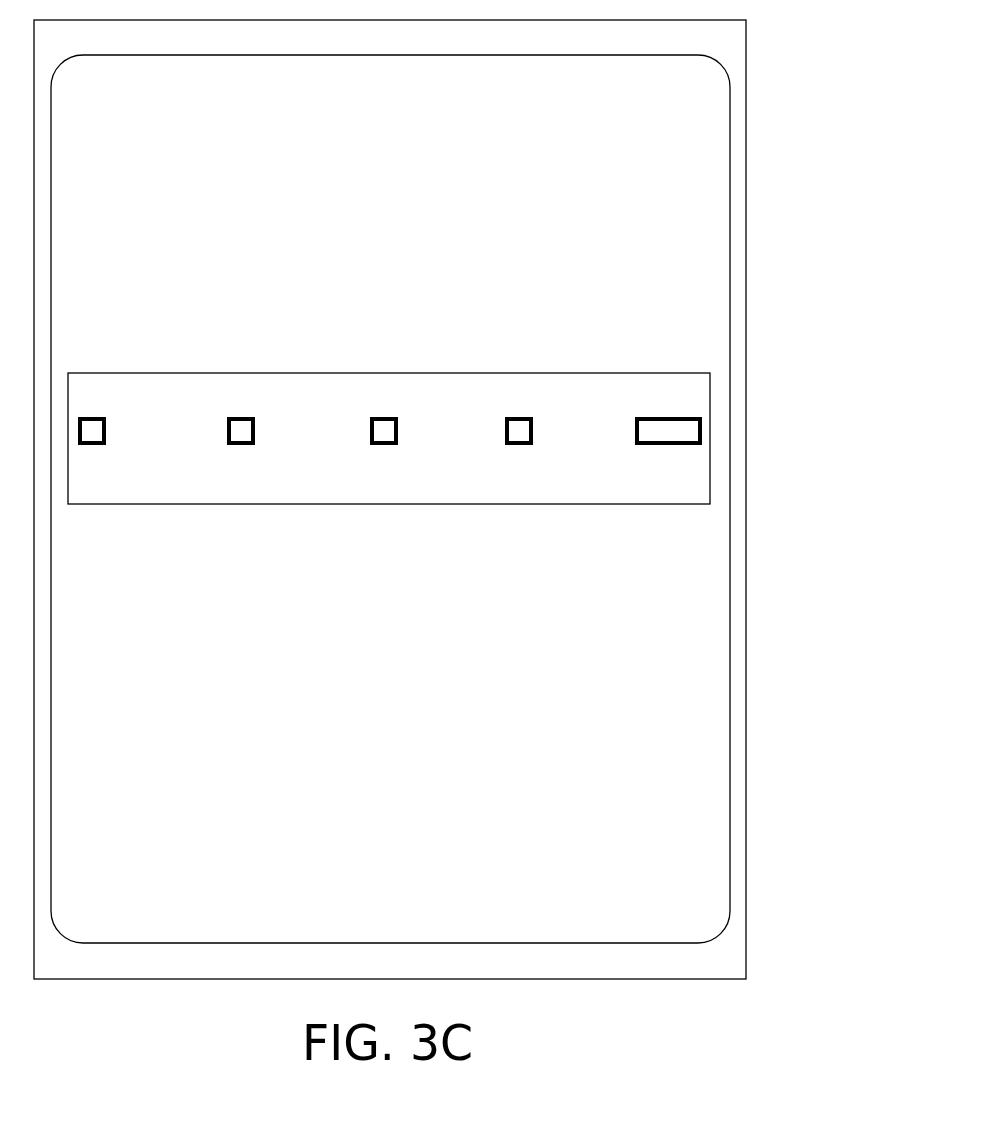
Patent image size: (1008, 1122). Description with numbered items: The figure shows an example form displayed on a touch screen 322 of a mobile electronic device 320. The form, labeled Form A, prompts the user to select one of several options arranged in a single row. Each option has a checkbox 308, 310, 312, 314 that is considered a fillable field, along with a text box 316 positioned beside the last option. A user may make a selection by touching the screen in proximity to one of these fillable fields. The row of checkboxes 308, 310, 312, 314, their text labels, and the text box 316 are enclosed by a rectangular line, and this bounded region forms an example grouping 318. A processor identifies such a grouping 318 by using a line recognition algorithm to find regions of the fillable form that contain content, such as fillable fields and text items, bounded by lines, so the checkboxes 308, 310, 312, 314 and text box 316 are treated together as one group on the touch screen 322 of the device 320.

The checkbox 308 is at (92, 415).
The checkbox 310 is at (240, 415).
The checkbox 312 is at (383, 415).
The checkbox 314 is at (518, 415).
The text box 316 is at (688, 415).
The grouping 318 is at (338, 505).
The mobile electronic device 320 is at (746, 570).
The touch screen 322 is at (715, 618).